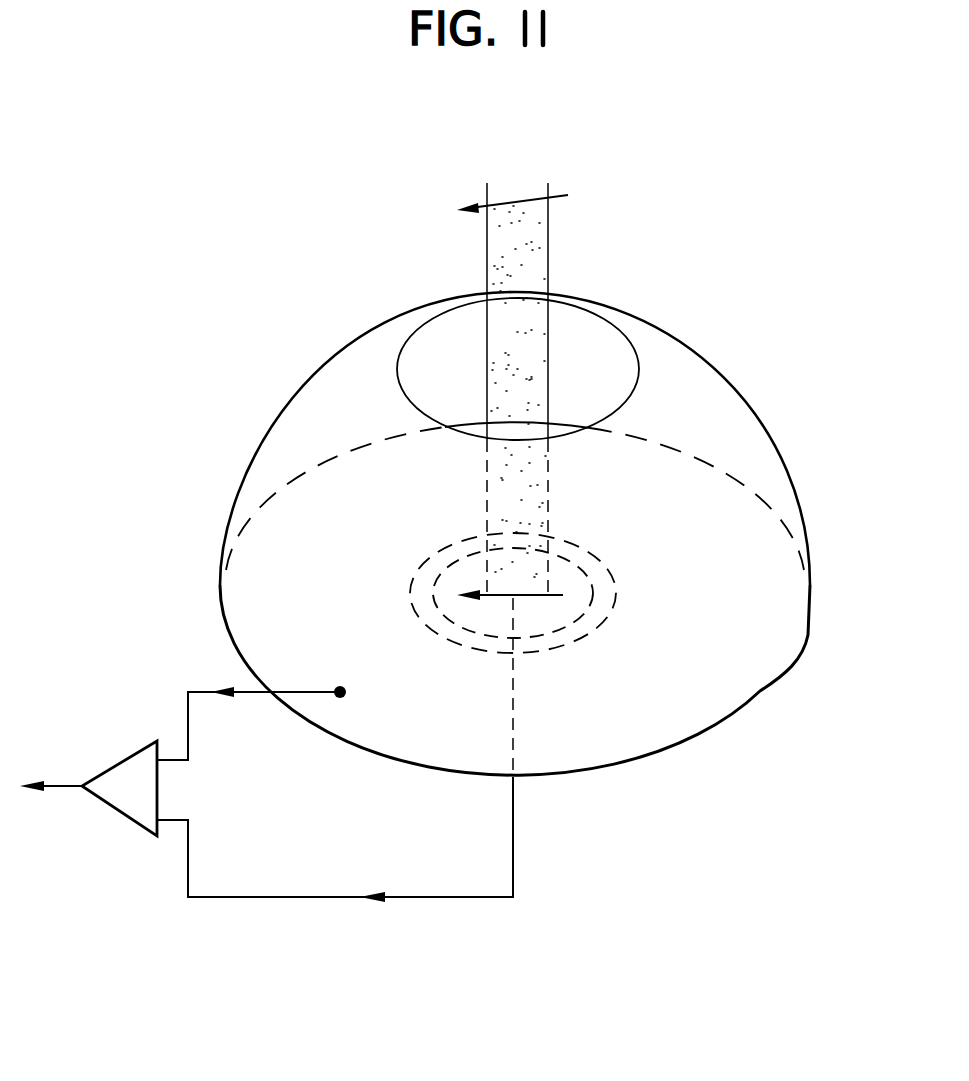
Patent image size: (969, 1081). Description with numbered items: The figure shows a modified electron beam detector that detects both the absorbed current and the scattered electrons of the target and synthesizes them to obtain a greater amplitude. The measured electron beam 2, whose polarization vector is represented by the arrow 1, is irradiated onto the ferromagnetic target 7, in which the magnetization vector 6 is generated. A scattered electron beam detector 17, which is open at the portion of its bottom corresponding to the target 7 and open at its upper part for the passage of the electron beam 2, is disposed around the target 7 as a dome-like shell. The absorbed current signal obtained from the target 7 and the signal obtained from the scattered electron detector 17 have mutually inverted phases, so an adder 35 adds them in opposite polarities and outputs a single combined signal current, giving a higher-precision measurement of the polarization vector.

The polarization vector arrow 1 is at (568, 195).
The electron beam 2 is at (535, 262).
The scattered electron beam detector 17 is at (696, 350).
The magnetization vector 6 is at (563, 595).
The ferromagnetic target 7 is at (552, 655).
The adder 35 is at (126, 818).